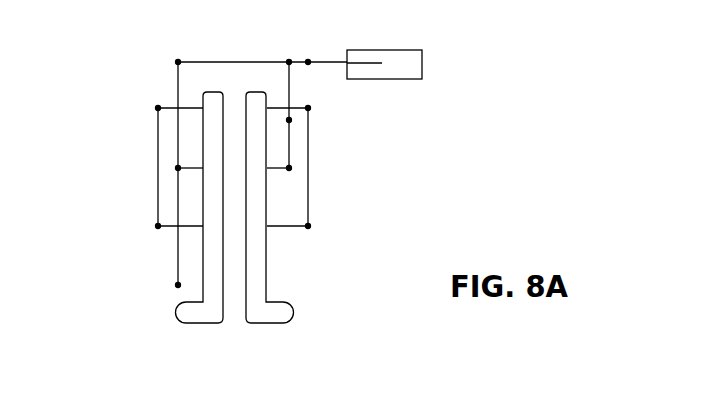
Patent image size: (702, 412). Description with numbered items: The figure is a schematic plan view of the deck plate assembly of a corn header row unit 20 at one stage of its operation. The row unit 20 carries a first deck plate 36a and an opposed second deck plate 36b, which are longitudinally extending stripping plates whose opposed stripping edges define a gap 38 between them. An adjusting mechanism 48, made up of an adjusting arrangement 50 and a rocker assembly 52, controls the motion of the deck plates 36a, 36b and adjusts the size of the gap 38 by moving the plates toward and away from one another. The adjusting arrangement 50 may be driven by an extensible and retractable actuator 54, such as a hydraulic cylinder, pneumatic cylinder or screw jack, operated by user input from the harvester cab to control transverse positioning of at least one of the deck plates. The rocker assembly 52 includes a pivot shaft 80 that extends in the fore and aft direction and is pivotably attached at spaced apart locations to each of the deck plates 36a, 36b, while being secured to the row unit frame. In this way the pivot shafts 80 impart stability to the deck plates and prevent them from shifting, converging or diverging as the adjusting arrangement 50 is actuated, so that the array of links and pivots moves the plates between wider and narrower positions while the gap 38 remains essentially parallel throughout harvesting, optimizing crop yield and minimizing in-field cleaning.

The row unit 20 is at (121, 132).
The first deck plate 36a is at (192, 324).
The second deck plate 36b is at (273, 324).
The gap 38 is at (240, 279).
The adjusting mechanism 48 is at (227, 27).
The adjusting arrangement 50 is at (166, 45).
The rocker assembly 52 is at (346, 134).
The actuator 54 is at (400, 50).
The pivot shaft 80 is at (158, 190).